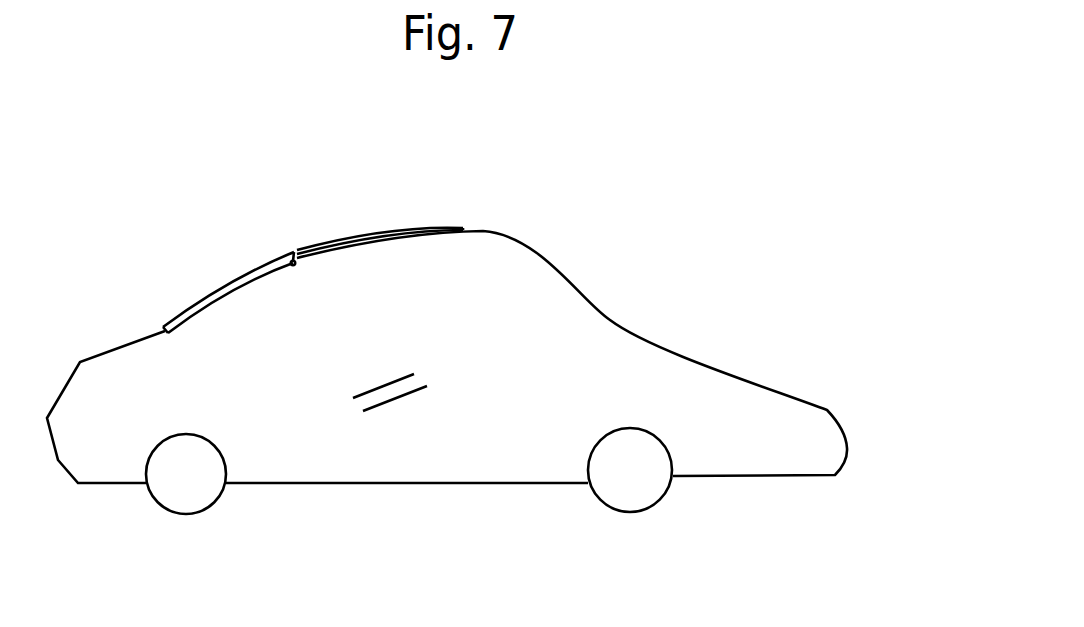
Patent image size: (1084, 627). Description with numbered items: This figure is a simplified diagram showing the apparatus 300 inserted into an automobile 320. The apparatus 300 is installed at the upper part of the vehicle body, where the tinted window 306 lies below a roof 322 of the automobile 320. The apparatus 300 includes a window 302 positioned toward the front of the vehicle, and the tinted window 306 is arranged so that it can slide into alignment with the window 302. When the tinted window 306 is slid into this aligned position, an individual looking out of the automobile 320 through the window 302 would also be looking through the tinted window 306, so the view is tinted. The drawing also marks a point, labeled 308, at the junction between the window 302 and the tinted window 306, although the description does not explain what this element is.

The apparatus 300 is at (314, 222).
The window 302 is at (198, 299).
The tinted window 306 is at (398, 191).
The hinge 308 is at (291, 266).
The automobile 320 is at (620, 320).
The roof 322 is at (434, 224).